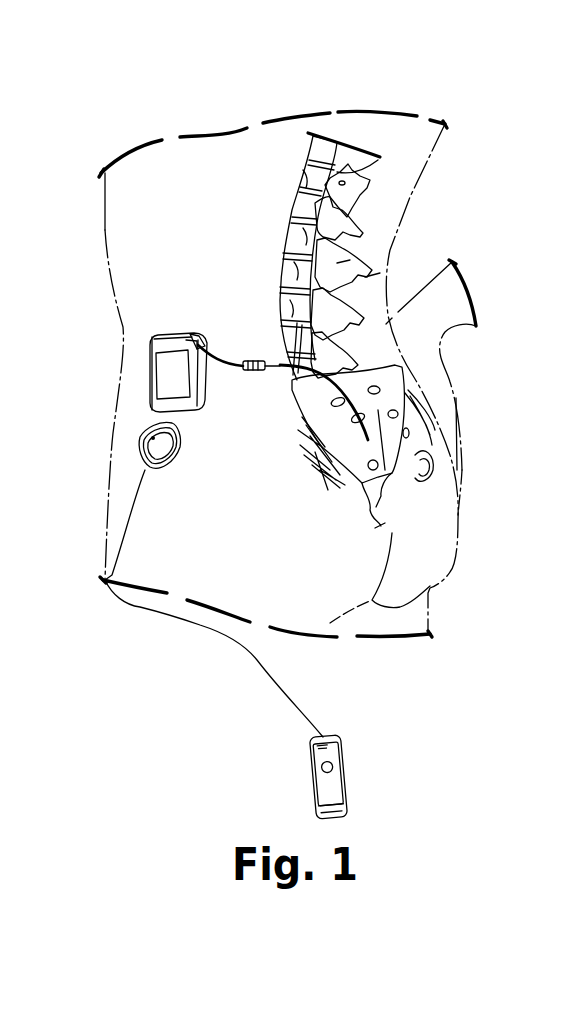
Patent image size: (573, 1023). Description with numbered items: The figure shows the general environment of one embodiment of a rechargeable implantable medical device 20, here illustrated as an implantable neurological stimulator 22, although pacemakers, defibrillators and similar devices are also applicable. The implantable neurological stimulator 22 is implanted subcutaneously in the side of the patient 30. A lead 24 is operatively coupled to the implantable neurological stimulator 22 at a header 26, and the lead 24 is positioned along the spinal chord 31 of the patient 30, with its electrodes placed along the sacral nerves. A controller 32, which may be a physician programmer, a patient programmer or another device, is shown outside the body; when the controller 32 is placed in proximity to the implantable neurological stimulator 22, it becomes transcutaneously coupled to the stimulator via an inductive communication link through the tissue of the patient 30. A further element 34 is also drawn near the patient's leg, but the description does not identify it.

The rechargeable implantable medical device 20 is at (138, 332).
The implantable neurological stimulator 22 is at (150, 372).
The lead 24 is at (292, 362).
The header 26 is at (175, 333).
The patient 30 is at (243, 95).
The spinal chord 31 is at (390, 263).
The controller 32 is at (328, 730).
The external sensor 34 is at (178, 450).